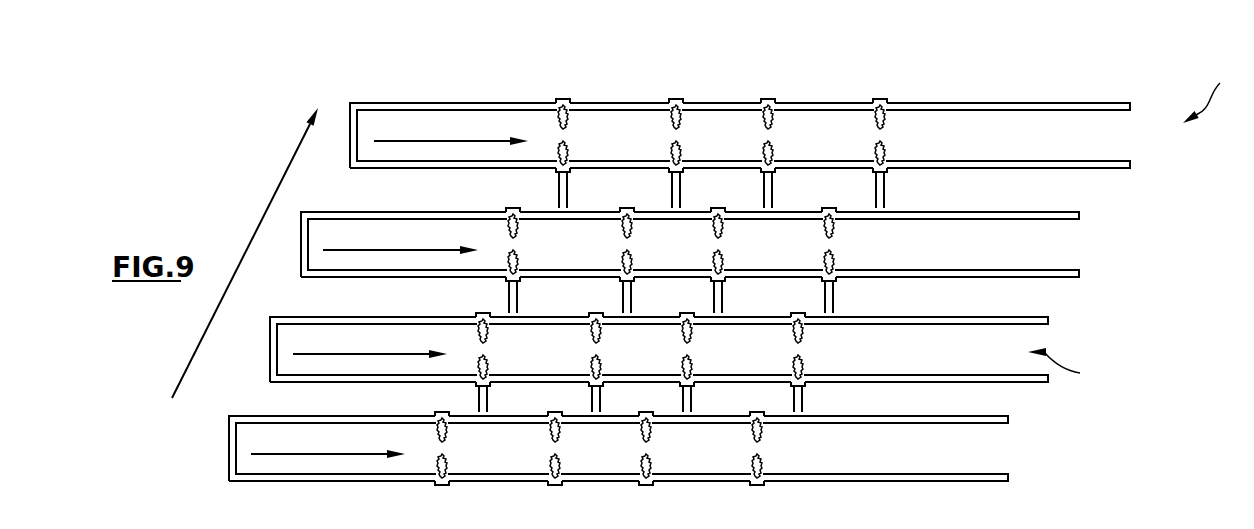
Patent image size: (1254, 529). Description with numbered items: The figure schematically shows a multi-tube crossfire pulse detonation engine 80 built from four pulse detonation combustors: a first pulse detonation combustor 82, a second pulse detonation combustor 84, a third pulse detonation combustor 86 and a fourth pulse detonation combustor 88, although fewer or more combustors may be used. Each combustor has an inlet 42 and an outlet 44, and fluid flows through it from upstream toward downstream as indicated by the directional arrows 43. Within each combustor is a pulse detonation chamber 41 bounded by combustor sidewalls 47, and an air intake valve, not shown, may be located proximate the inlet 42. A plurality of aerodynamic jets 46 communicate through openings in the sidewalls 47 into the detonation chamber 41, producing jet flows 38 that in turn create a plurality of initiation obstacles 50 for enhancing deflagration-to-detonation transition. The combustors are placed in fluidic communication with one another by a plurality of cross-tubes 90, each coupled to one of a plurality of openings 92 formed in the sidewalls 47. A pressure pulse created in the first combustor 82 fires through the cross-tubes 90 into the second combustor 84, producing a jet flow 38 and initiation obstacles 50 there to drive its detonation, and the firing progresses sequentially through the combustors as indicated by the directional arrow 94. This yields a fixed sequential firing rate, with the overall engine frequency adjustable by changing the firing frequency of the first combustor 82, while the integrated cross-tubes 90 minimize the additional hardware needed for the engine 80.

The multi-tube crossfire pulse detonation engine 80 is at (1214, 99).
The first pulse detonation combustor 82 is at (229, 452).
The second pulse detonation combustor 84 is at (270, 355).
The third pulse detonation combustor 86 is at (301, 248).
The fourth pulse detonation combustor 88 is at (350, 140).
The directional arrow 94 is at (257, 231).
The inlet 42 is at (286, 367).
The directional arrows 43 is at (468, 140).
The aerodynamic jets 46 is at (672, 99).
The jet flow 38 is at (447, 440).
The initiation obstacles 50 is at (885, 150).
The pulse detonation chamber 41 is at (965, 147).
The combustor sidewalls 47 is at (1094, 170).
The cross-tubes 90 is at (886, 196).
The openings 92 is at (769, 218).
The outlet 44 is at (1067, 369).